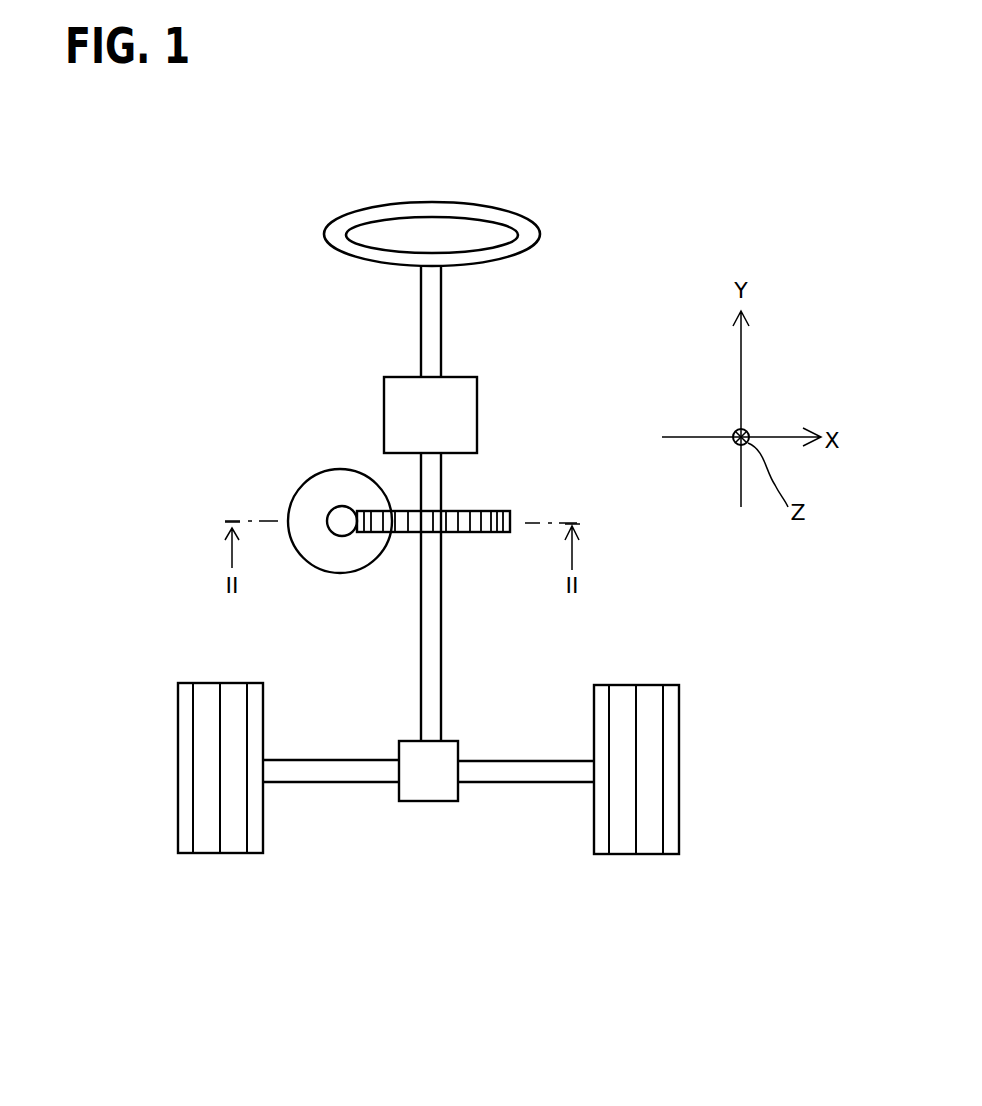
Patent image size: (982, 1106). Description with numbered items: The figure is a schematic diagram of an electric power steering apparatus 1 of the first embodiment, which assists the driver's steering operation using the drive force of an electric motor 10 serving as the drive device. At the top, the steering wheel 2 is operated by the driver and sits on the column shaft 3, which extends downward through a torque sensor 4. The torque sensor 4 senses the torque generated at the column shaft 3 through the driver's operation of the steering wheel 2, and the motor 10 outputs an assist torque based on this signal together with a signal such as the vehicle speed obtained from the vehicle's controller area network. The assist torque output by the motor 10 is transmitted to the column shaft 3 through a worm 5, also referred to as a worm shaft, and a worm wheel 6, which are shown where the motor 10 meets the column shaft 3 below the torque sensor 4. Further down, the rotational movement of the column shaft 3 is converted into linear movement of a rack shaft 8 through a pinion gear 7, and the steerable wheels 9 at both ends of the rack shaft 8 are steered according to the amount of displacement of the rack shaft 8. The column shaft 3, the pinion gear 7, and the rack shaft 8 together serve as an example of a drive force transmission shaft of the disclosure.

The electric power steering apparatus 1 is at (192, 260).
The steering wheel 2 is at (323, 234).
The column shaft 3 is at (419, 655).
The torque sensor 4 is at (477, 404).
The worm 5 is at (344, 531).
The worm wheel 6 is at (484, 533).
The pinion gear 7 is at (420, 802).
The rack shaft 8 is at (323, 783).
The steerable wheels 9 is at (237, 854).
The motor 10 is at (335, 470).